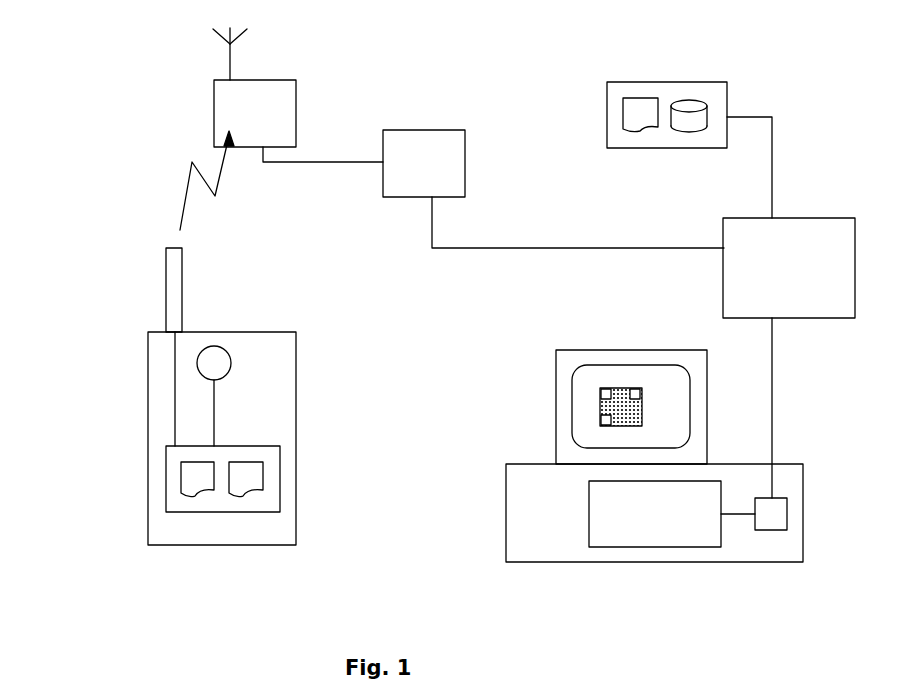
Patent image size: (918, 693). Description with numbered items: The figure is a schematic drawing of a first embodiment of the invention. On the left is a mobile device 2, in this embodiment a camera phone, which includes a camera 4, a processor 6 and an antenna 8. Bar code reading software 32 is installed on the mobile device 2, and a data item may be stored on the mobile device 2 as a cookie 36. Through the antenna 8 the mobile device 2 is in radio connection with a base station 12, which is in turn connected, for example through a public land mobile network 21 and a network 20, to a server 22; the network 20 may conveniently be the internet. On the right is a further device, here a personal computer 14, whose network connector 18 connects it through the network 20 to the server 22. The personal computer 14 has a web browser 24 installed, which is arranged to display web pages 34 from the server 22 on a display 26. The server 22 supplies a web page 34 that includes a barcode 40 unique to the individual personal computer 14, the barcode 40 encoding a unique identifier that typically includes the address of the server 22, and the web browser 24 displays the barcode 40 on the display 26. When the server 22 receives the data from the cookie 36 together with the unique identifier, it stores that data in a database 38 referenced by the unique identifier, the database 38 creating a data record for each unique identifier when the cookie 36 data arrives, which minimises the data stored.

The mobile device 2 is at (148, 398).
The camera 4 is at (231, 358).
The processor 6 is at (184, 512).
The antenna 8 is at (165, 282).
The base station 12 is at (214, 128).
The personal computer 14 is at (608, 562).
The network connector 18 is at (770, 530).
The network 20 is at (724, 285).
The public land mobile network 21 is at (383, 180).
The server 22 is at (605, 130).
The web browser 24 is at (655, 547).
The display 26 is at (556, 415).
The bar code reading software 32 is at (181, 482).
The web page 34 is at (641, 98).
The cookie 36 is at (240, 495).
The database 38 is at (690, 100).
The barcode 40 is at (600, 398).